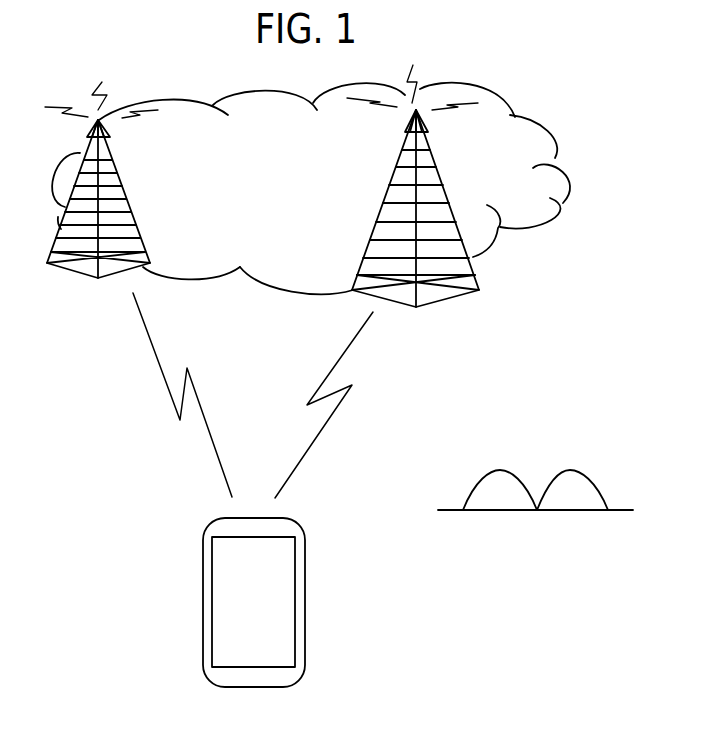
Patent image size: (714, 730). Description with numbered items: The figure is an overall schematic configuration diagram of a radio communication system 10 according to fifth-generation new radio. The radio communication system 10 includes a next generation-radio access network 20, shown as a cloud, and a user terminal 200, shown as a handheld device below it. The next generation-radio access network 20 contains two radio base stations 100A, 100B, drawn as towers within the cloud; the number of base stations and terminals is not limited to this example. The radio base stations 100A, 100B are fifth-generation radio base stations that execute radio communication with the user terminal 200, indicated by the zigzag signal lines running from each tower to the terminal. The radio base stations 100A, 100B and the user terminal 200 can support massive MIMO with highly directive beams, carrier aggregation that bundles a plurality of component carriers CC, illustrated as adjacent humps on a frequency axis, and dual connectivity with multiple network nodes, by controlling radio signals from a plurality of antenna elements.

The radio communication system 10 is at (580, 130).
The next generation-radio access network (NG-RAN) 20 is at (563, 203).
The radio base station (gNB) 100A is at (73, 270).
The radio base station (gNB) 100B is at (445, 300).
The user terminal (UE) 200 is at (290, 608).
The component carrier CC is at (587, 473).